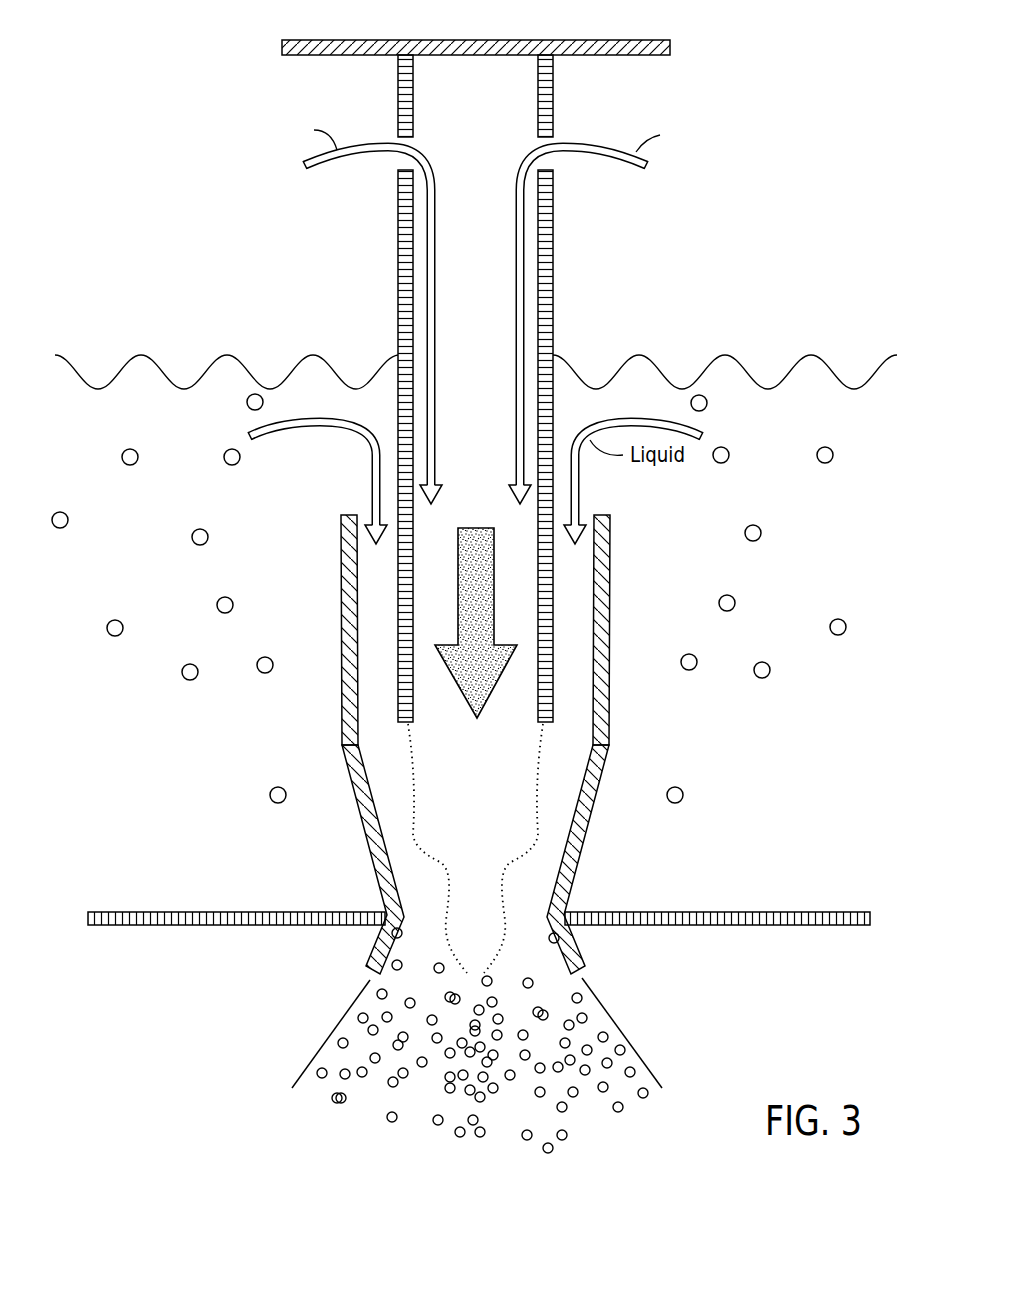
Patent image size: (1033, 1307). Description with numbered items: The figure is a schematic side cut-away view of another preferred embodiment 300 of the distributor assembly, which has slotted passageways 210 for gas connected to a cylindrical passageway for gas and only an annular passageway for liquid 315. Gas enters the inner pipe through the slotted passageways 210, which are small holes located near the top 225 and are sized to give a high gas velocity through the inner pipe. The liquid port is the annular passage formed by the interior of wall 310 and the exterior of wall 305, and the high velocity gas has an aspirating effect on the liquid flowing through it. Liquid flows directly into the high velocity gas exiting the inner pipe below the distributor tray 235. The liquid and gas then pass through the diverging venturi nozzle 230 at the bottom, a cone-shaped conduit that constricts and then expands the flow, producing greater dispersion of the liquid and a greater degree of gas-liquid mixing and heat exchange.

The top 225 is at (583, 40).
The slotted passageways for gas 210 is at (397, 160).
The wall 305 is at (397, 320).
The distributor assembly embodiment 300 is at (255, 283).
The annular passageway for liquid 315 is at (365, 518).
The wall 310 is at (343, 716).
The venturi nozzle 230 is at (323, 750).
The distributor tray 235 is at (733, 912).